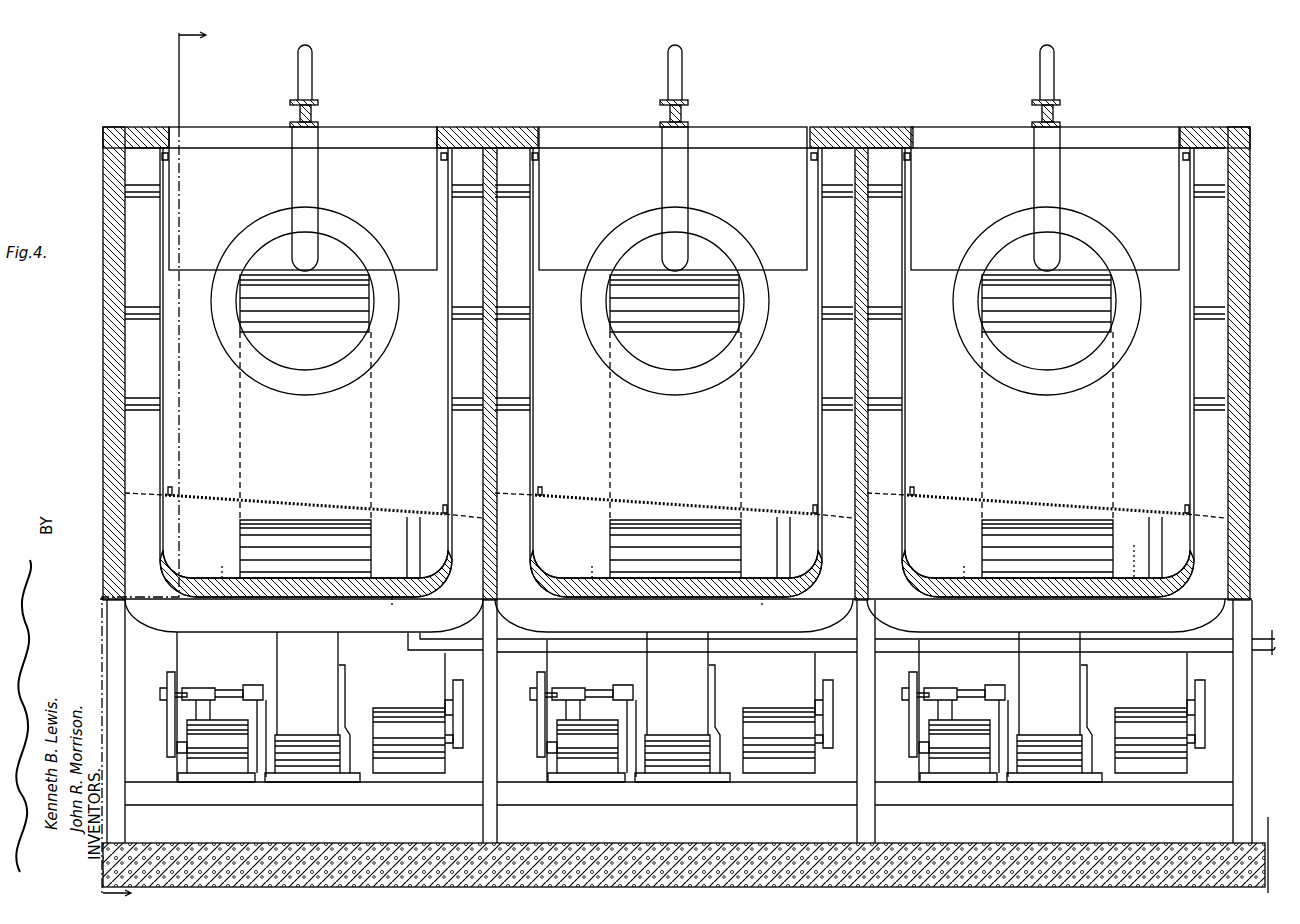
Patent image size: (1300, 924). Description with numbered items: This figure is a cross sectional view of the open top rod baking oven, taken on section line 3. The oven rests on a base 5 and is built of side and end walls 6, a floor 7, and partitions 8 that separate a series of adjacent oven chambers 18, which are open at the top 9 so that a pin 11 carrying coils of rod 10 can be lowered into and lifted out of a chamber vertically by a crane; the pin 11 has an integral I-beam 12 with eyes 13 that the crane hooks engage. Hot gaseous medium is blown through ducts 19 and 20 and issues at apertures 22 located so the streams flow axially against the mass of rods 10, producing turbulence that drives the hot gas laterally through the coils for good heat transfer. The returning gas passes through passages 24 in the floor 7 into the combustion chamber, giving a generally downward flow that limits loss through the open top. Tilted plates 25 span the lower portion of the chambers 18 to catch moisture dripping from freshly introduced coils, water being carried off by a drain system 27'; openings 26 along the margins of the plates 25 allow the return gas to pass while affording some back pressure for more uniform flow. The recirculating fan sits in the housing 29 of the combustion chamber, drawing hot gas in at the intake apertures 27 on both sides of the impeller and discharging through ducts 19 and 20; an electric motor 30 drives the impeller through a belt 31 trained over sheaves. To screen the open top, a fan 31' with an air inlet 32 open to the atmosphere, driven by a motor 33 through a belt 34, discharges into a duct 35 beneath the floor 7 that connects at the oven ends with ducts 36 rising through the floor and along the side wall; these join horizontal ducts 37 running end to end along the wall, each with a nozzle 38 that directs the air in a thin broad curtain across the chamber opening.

The section line 3- 3 is at (695, 465).
The base 5 is at (150, 645).
The side and end walls 6 is at (103, 330).
The floor 7 is at (305, 600).
The partitions 8 is at (497, 272).
The open top 9 is at (437, 127).
The rods 10 is at (300, 394).
The pin 11 is at (318, 256).
The I-beam 12 is at (318, 116).
The eyes 13 is at (312, 74).
The oven chambers 18 is at (407, 400).
The duct 19 is at (371, 441).
The duct 20 is at (369, 300).
The aperture 22 is at (300, 331).
The passages 24 is at (666, 574).
The plates 25 is at (308, 509).
The openings 26 is at (170, 492).
The intake 27 is at (784, 547).
The drain system 27' is at (842, 656).
The housing 29 is at (177, 652).
The electric motor 30 is at (415, 740).
The belt 31 is at (833, 729).
The fan 31' is at (631, 712).
The air inlet 32 is at (345, 688).
The motor 33 is at (228, 718).
The belt 34 is at (177, 741).
The duct 35 is at (1058, 626).
The ducts 36 is at (452, 462).
The ducts 37 is at (450, 190).
The nozzle 38 is at (438, 158).